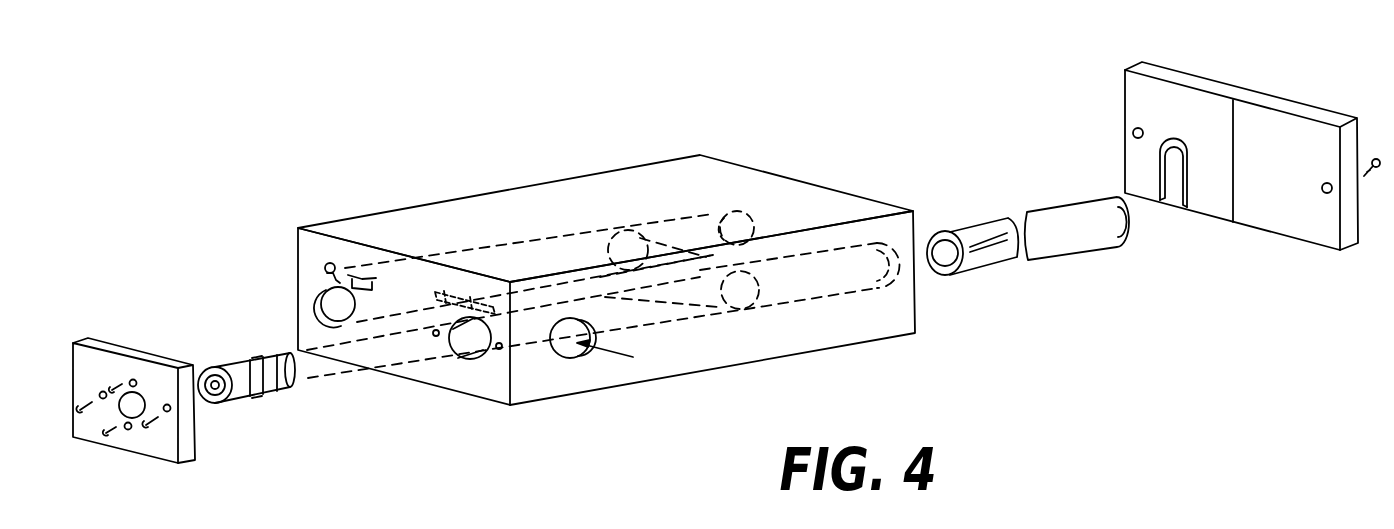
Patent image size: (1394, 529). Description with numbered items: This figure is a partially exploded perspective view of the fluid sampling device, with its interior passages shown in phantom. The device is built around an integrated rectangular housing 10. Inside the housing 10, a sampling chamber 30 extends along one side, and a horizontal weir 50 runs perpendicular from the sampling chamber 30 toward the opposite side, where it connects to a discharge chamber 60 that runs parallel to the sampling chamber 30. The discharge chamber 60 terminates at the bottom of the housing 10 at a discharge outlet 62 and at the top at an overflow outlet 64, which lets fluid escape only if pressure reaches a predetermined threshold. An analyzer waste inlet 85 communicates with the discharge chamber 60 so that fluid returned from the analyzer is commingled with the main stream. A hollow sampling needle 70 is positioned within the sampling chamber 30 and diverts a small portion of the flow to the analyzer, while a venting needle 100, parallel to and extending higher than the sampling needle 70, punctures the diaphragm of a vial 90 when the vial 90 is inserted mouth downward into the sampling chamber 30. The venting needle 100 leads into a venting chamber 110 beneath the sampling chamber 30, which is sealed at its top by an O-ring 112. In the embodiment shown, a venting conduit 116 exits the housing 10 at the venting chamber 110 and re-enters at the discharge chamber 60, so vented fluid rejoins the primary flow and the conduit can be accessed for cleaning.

The housing 10 is at (407, 243).
The sampling chamber 30 is at (667, 313).
The horizontal weir 50 is at (738, 268).
The discharge chamber 60 is at (558, 264).
The discharge outlet 62 is at (320, 307).
The overflow outlet 64 is at (1177, 183).
The sampling needle 70 is at (303, 371).
The analyzer waste inlet 85 is at (330, 266).
The vial 90 is at (1083, 235).
The venting needle 100 is at (297, 352).
The venting chamber 110 is at (263, 388).
The O-ring 112 is at (1203, 85).
The venting conduit 116 is at (465, 298).